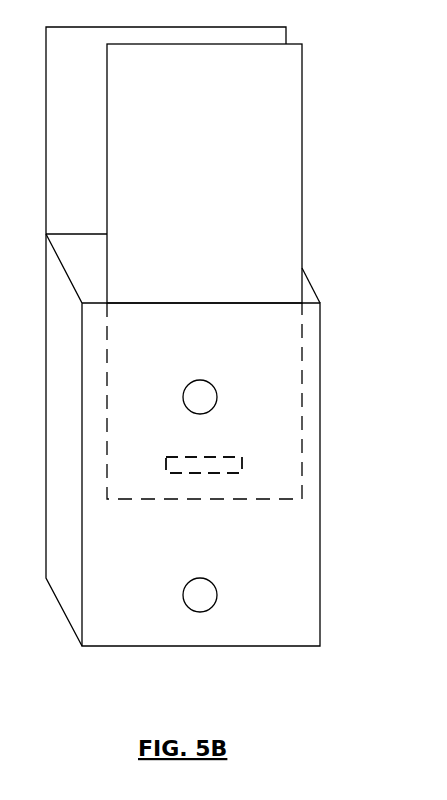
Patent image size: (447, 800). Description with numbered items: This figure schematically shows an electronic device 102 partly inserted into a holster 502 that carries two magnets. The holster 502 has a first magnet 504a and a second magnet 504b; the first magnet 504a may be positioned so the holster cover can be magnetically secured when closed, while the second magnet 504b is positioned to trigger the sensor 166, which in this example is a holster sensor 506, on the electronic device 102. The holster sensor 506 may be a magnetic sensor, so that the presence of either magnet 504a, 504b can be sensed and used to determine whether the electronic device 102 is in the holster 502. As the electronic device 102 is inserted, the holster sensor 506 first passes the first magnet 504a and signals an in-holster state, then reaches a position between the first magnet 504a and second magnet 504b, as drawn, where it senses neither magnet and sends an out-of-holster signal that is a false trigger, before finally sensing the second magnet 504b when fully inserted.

The electronic device 102 is at (267, 113).
The holster 502 is at (320, 337).
The first magnet 504a is at (200, 414).
The second magnet 504b is at (197, 578).
The sensor 166 is at (165, 472).
The holster sensor 506 is at (204, 465).